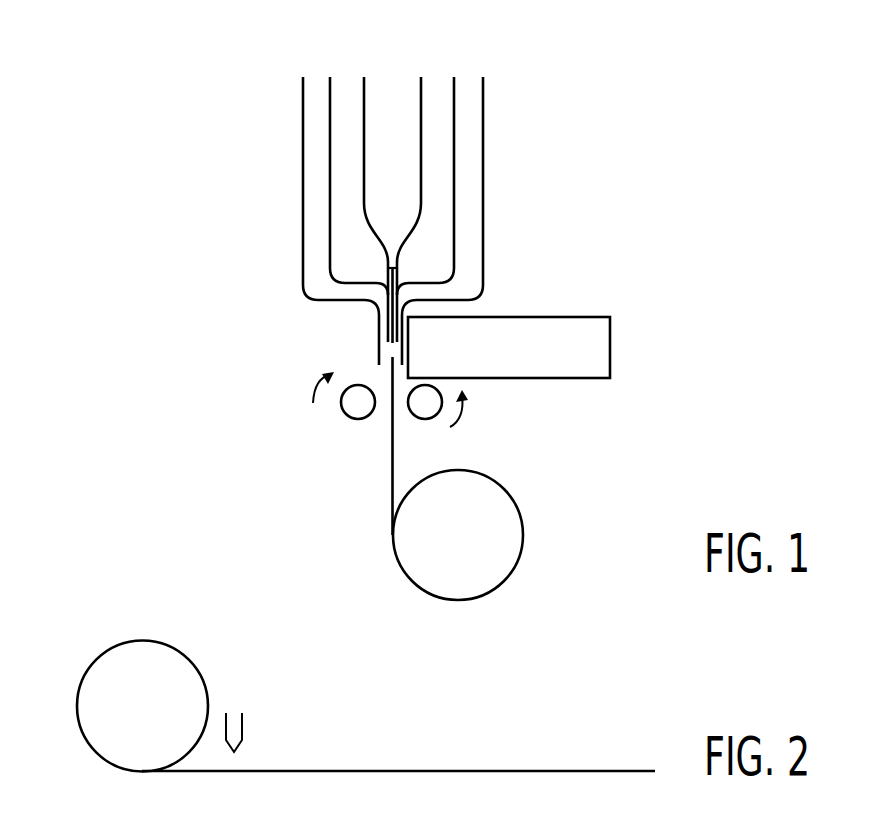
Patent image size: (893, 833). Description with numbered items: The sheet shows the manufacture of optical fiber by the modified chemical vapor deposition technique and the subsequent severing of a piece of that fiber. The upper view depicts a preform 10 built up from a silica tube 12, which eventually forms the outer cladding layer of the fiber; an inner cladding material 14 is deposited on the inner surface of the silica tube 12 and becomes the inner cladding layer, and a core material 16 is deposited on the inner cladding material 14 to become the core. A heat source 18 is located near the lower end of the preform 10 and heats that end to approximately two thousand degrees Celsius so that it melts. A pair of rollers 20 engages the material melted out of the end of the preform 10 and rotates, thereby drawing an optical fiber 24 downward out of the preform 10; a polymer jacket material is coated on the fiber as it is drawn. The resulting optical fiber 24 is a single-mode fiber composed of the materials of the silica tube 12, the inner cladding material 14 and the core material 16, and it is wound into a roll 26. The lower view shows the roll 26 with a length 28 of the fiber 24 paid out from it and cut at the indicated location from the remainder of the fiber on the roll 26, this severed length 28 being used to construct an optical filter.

In FIG. 1, the preform 10 is at (616, 130).
In FIG. 1, the silica tube 12 is at (315, 121).
In FIG. 1, the inner cladding material 14 is at (346, 78).
In FIG. 1, the core material 16 is at (395, 82).
In FIG. 1, the heat source 18 is at (610, 330).
In FIG. 1, the rollers 20 is at (355, 416).
In FIG. 1, the optical fiber 24 is at (390, 510).
In FIG. 1, the roll 26 is at (523, 530).
In FIG. 2, the roll 26 is at (176, 650).
In FIG. 2, the length of fiber 28 is at (641, 780).